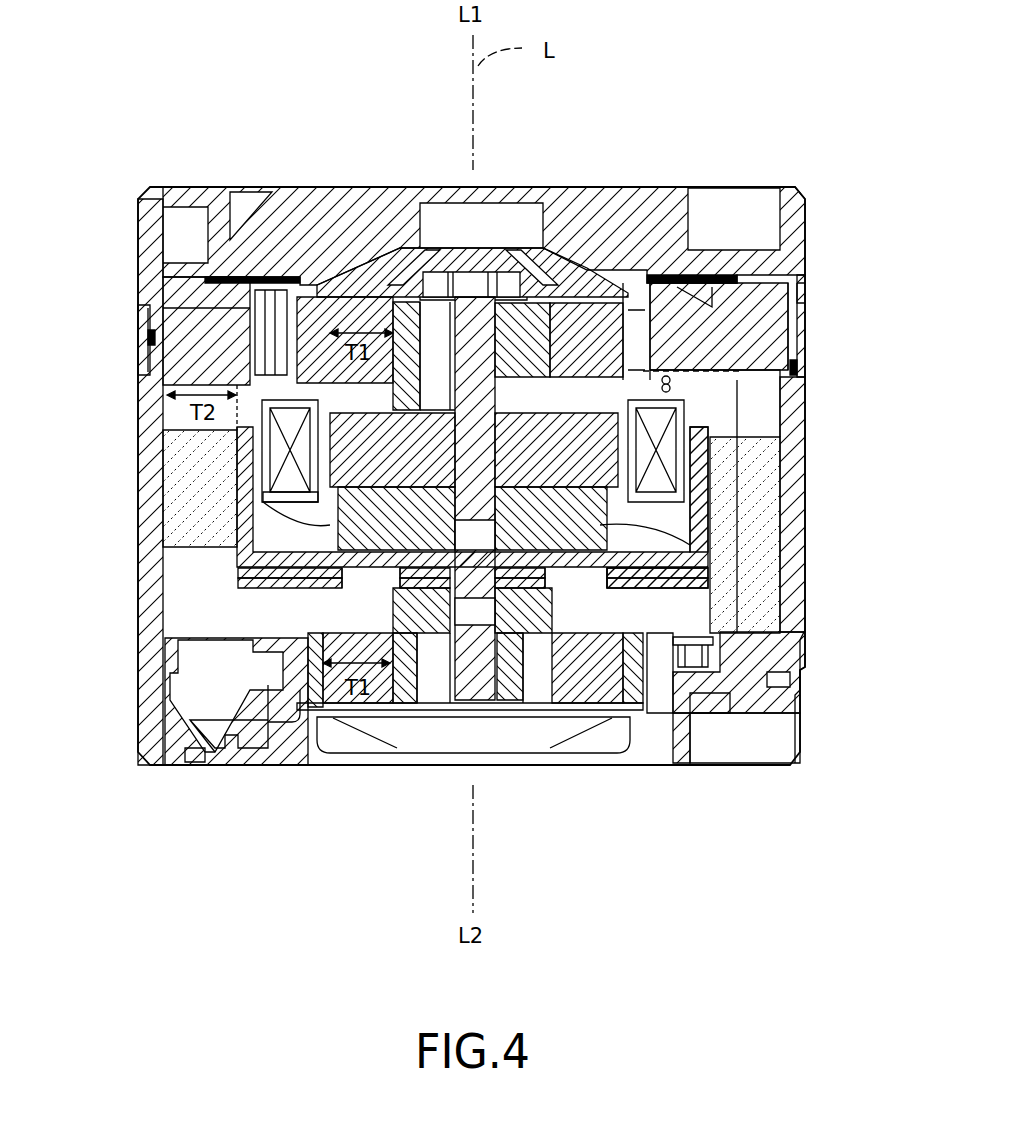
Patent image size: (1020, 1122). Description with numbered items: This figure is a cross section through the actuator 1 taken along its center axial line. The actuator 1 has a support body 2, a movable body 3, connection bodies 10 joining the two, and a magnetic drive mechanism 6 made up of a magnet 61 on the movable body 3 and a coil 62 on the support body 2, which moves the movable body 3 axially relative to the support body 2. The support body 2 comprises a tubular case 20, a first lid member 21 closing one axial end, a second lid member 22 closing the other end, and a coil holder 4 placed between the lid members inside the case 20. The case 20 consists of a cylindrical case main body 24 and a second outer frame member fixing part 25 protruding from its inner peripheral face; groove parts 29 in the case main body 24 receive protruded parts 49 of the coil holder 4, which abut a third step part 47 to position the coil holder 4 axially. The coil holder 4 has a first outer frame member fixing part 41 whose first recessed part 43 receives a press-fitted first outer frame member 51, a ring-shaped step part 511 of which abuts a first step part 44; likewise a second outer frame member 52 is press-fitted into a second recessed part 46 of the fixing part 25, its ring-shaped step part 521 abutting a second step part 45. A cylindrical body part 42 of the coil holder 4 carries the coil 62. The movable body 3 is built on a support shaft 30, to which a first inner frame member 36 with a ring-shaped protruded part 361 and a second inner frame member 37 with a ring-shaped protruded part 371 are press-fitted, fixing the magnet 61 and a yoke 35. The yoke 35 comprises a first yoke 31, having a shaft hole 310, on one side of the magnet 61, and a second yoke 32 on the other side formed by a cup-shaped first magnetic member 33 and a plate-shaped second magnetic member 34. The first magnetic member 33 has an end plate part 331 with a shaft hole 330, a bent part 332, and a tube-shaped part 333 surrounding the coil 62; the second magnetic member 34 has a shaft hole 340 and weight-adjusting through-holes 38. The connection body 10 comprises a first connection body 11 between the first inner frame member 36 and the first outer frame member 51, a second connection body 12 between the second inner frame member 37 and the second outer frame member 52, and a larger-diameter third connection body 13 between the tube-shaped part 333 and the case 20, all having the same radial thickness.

The actuator 1 is at (107, 78).
The support body 2 is at (813, 298).
The movable body 3 is at (730, 572).
The coil holder 4 is at (822, 290).
The magnetic drive mechanism 6 is at (96, 517).
The connection body 10 is at (343, 464).
The first connection body 11 is at (348, 320).
The second connection body 12 is at (598, 690).
The third connection body 13 is at (200, 455).
The case 20 is at (812, 491).
The first lid member 21 is at (677, 181).
The second lid member 22 is at (573, 770).
The case main body 24 is at (805, 645).
The second outer frame member fixing part 25 is at (797, 668).
The groove part 29 is at (147, 336).
The support shaft 30 is at (470, 335).
The first yoke 31 is at (245, 470).
The second yoke 32 is at (88, 587).
The first magnetic member 33 is at (240, 574).
The second magnetic member 34 is at (240, 586).
The yoke 35 is at (46, 490).
The first inner frame member 36 is at (533, 323).
The second inner frame member 37 is at (540, 735).
The through-hole 38 is at (360, 572).
The first outer frame member fixing part 41 is at (700, 280).
The body part 42 is at (745, 400).
The first recessed part 43 is at (655, 332).
The first step part 44 is at (778, 501).
The second step part 45 is at (464, 682).
The second recessed part 46 is at (700, 705).
The third step part 47 is at (155, 368).
The protruded part 49 is at (147, 318).
The first outer frame member 51 is at (633, 305).
The second outer frame member 52 is at (640, 730).
The magnet 61 is at (320, 520).
The coil 62 is at (305, 502).
The shaft hole 310 is at (458, 442).
The shaft hole 330 is at (475, 535).
The end plate part 331 is at (660, 520).
The bent part 332 is at (700, 575).
The tube-shaped part 333 is at (700, 505).
The shaft hole 340 is at (475, 611).
The ring-shaped protruded part 361 is at (505, 370).
The ring-shaped protruded part 371 is at (500, 735).
The ring-shaped step part 511 is at (692, 383).
The ring-shaped step part 521 is at (303, 653).